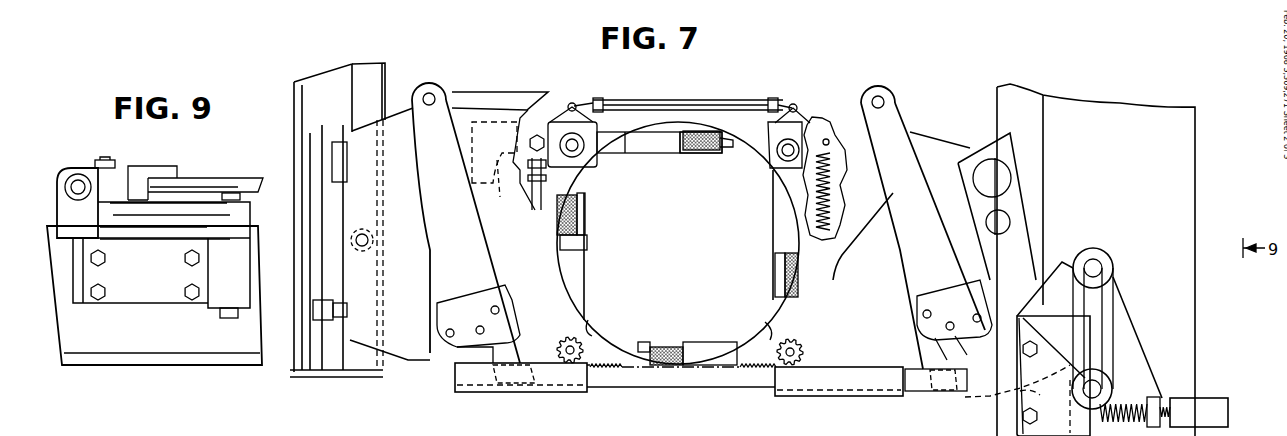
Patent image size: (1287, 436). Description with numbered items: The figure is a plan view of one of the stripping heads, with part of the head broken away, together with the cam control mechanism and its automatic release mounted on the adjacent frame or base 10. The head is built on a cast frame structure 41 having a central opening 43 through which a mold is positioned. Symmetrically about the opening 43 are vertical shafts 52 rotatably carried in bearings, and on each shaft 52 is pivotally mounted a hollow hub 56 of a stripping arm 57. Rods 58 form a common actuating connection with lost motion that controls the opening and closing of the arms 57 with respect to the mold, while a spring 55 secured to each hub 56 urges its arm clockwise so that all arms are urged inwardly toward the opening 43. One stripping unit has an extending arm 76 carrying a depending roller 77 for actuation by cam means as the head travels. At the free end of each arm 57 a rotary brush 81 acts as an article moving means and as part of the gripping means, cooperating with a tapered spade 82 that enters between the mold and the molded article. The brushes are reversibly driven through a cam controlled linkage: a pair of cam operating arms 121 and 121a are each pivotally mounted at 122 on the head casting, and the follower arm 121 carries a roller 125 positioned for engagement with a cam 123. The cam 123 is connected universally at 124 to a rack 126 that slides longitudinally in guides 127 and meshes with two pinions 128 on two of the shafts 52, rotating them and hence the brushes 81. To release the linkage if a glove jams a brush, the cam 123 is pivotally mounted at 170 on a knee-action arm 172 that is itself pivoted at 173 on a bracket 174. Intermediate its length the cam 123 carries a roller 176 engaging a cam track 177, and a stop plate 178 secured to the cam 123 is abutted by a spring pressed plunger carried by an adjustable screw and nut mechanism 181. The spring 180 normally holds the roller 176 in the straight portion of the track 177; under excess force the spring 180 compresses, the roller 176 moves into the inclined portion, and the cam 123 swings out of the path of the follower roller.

In FIG. 9, the base plate 10 is at (163, 339).
In FIG. 7, the base plate 10 is at (330, 110).
In FIG. 7, the cast frame structure 41 is at (697, 243).
In FIG. 7, the central opening 43 is at (617, 350).
In FIG. 7, the vertical shaft 52 is at (582, 150).
In FIG. 7, the spring 55 is at (832, 181).
In FIG. 7, the hollow hub 56 is at (560, 99).
In FIG. 7, the stripping arm 57 is at (640, 156).
In FIG. 7, the rod 58 is at (640, 98).
In FIG. 7, the extending arm 76 is at (507, 122).
In FIG. 7, the depending roller 77 is at (500, 197).
In FIG. 7, the rotary brush 81 is at (718, 142).
In FIG. 7, the spade 82 is at (706, 154).
In FIG. 7, the cam operating arm 121 is at (695, 214).
In FIG. 7, the cam operating arm 121a is at (414, 90).
In FIG. 7, the pivot 122 is at (436, 95).
In FIG. 7, the cam 123 is at (978, 151).
In FIG. 7, the universal connection 124 is at (929, 392).
In FIG. 7, the roller 125 is at (436, 338).
In FIG. 7, the rack 126 is at (742, 389).
In FIG. 7, the guide 127 is at (567, 394).
In FIG. 7, the pinion 128 is at (557, 346).
In FIG. 9, the pivot 170 is at (112, 150).
In FIG. 9, the knee-action arm 172 is at (248, 213).
In FIG. 9, the pivot 173 is at (238, 178).
In FIG. 7, the pivot 173 is at (1095, 257).
In FIG. 9, the bracket 174 is at (170, 236).
In FIG. 7, the bracket 174 is at (1150, 367).
In FIG. 7, the roller 176 is at (990, 398).
In FIG. 7, the cam track 177 is at (1053, 349).
In FIG. 9, the stop plate 178 is at (139, 167).
In FIG. 7, the spring 180 is at (1113, 402).
In FIG. 9, the adjustable screw and nut mechanism 181 is at (70, 173).
In FIG. 7, the adjustable screw and nut mechanism 181 is at (1206, 398).